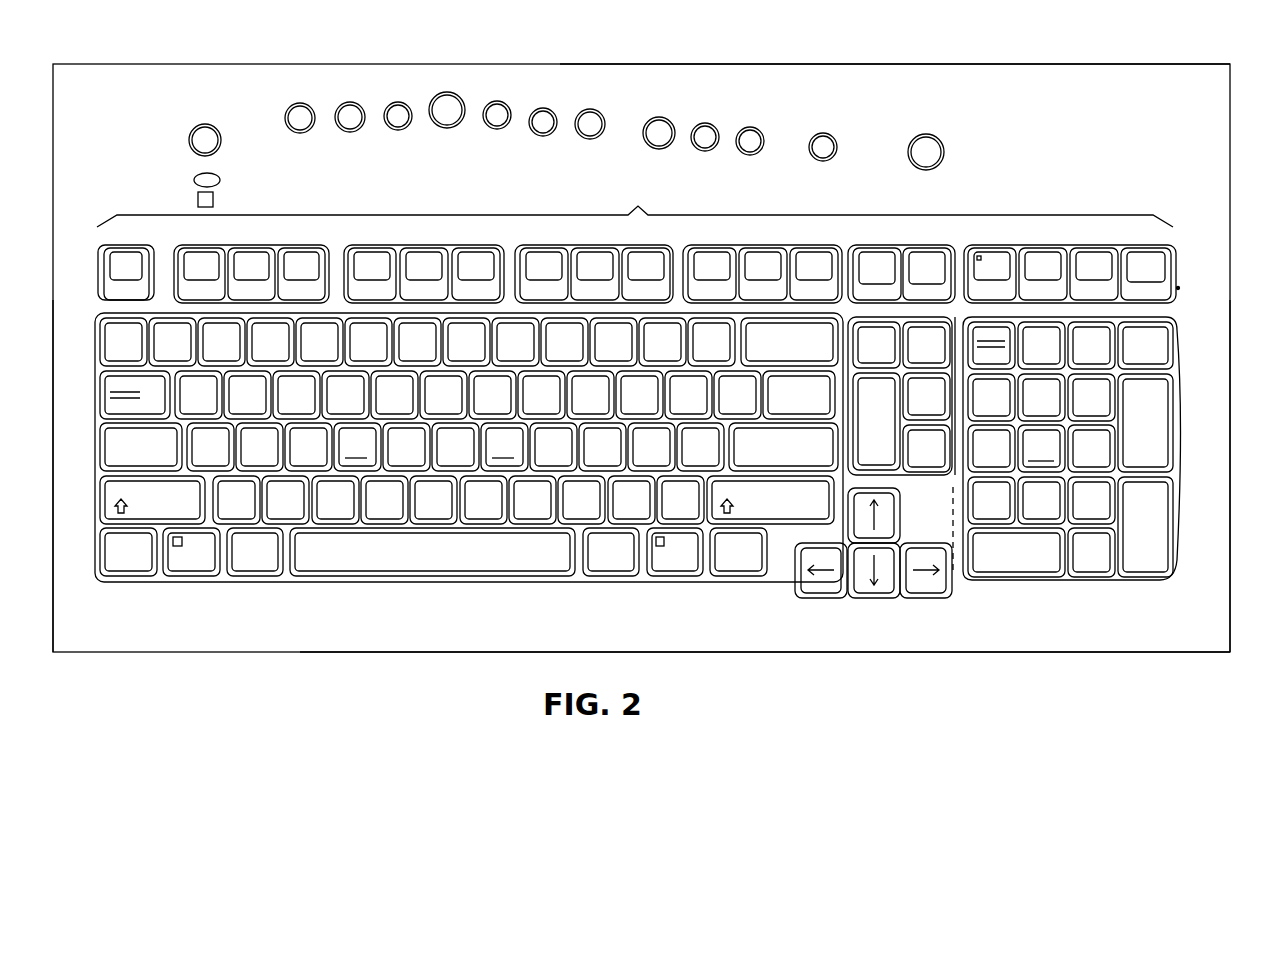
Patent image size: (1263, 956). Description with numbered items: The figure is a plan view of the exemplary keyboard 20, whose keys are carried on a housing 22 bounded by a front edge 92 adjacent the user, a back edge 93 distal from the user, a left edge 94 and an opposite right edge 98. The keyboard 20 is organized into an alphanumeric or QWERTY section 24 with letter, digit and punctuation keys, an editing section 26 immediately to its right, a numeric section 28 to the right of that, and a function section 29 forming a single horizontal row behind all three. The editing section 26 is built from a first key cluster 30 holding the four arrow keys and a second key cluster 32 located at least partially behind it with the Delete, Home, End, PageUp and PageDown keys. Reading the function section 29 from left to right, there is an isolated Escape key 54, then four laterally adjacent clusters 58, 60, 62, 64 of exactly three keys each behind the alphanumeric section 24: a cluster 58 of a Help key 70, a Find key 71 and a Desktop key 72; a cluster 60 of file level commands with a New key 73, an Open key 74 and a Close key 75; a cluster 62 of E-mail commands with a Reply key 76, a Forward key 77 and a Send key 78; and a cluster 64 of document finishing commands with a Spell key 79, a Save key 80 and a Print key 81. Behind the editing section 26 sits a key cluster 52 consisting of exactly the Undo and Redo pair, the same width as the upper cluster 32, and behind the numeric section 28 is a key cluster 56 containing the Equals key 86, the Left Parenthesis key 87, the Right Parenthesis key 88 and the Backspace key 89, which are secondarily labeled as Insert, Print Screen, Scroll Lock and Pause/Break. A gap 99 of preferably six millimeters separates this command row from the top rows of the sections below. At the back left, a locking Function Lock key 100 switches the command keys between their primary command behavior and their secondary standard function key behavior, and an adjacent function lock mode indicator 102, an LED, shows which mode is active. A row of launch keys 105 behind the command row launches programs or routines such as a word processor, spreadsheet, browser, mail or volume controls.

The keyboard 20 is at (410, 690).
The housing 22 is at (131, 653).
The alphanumeric section 24 is at (469, 464).
The editing section 26 is at (869, 477).
The numeric section 28 is at (1045, 582).
The function section 29 is at (635, 205).
The first key cluster 30 is at (795, 598).
The second key cluster 32 is at (960, 318).
The key cluster 52 is at (908, 250).
The Escape key 54 is at (132, 248).
The key cluster 56 is at (1090, 243).
The key cluster 58 is at (272, 245).
The key cluster 60 is at (441, 245).
The key cluster 62 is at (612, 247).
The key cluster 64 is at (781, 247).
The Help key 70 is at (199, 252).
The Find key 71 is at (247, 252).
The Desktop key 72 is at (297, 252).
The New key 73 is at (374, 252).
The Open key 74 is at (424, 252).
The Close key 75 is at (474, 252).
The Reply key 76 is at (546, 252).
The Forward key 77 is at (594, 252).
The Send key 78 is at (644, 252).
The Spell key 79 is at (714, 252).
The Save key 80 is at (764, 252).
The Print key 81 is at (814, 252).
The Equals key 86 is at (999, 252).
The Left Parenthesis key 87 is at (1049, 252).
The Right Parenthesis key 88 is at (1097, 252).
The Backspace key 89 is at (1170, 275).
The front edge 92 is at (781, 653).
The back edge 93 is at (949, 64).
The left edge 94 is at (53, 630).
The right side edge of housing 98 is at (1230, 635).
The gap 99 is at (207, 318).
The Function Lock key 100 is at (203, 128).
The function lock mode indicator 102 is at (222, 182).
The launch keys 105 is at (303, 104).